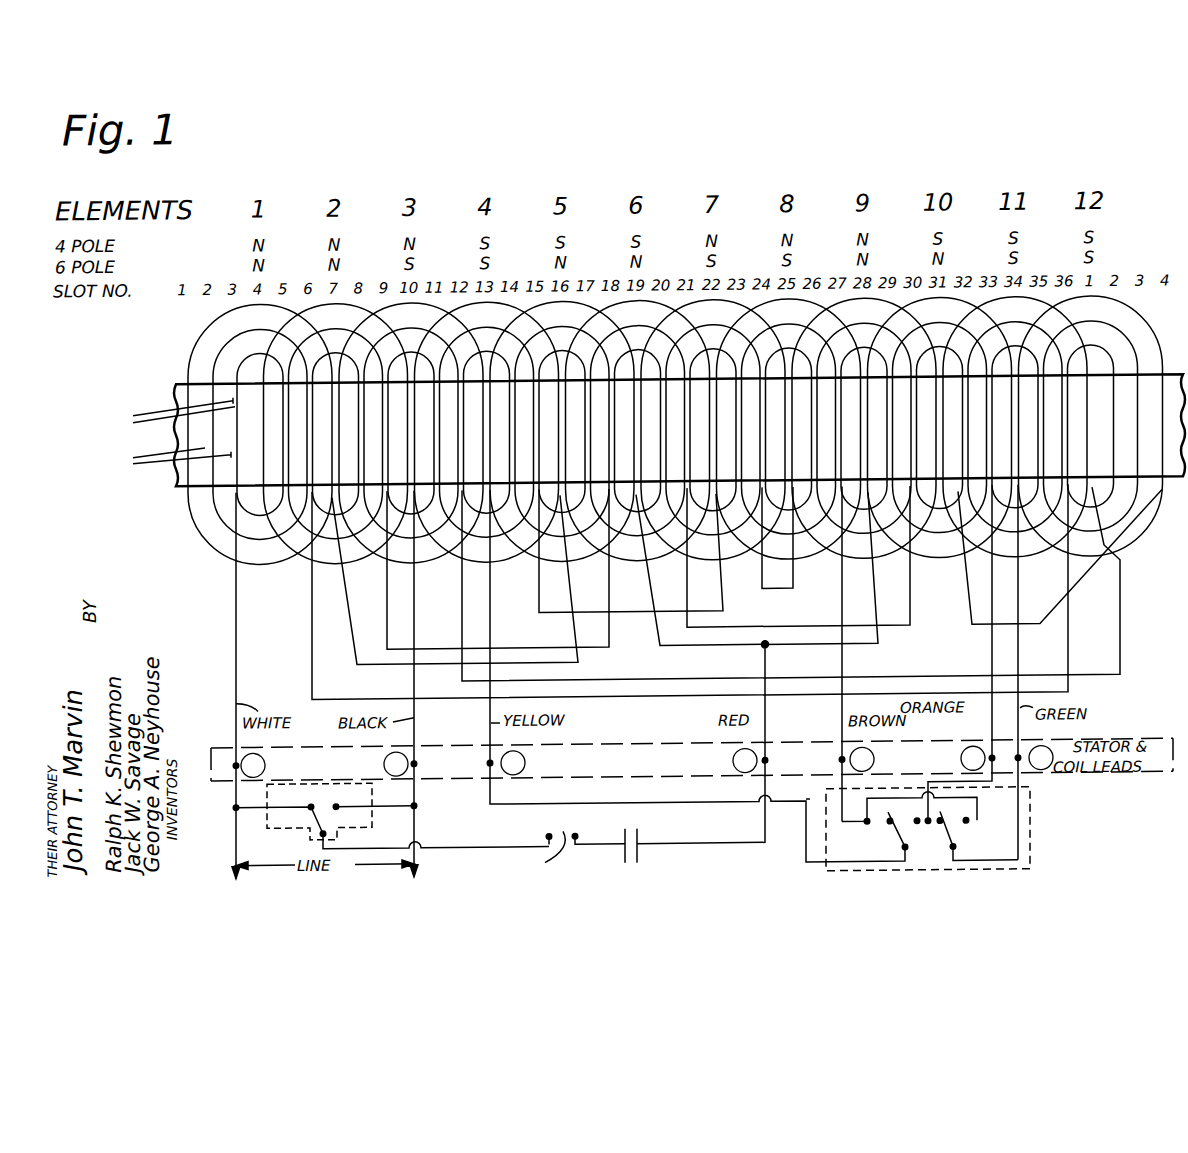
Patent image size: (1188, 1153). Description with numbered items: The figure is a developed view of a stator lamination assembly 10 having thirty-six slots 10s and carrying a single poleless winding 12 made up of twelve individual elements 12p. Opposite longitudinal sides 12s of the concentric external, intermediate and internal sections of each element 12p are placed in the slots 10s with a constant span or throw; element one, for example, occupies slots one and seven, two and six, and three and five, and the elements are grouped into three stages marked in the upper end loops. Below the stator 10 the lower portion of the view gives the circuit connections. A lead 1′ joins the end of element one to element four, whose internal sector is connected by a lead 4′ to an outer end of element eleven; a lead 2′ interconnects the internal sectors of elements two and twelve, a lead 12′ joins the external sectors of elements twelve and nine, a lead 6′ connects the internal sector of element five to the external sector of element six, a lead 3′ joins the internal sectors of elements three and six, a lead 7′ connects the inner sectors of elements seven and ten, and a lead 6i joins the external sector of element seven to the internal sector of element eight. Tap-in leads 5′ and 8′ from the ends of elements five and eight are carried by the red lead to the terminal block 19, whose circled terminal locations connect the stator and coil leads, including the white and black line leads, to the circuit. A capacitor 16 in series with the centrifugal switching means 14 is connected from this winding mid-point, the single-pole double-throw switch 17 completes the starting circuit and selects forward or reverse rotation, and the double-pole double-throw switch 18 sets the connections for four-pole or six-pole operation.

The stator lamination assembly 10 is at (176, 381).
The poleless winding 12 is at (218, 514).
The slot 10s is at (165, 459).
The longitudinal sides 12s is at (166, 415).
The elements 12p is at (503, 567).
The lead 1′ is at (510, 662).
The lead 2′ is at (612, 697).
The lead 3′ is at (521, 647).
The lead 4′ is at (621, 680).
The tap-in lead 5′ is at (702, 648).
The lead 6′ is at (640, 611).
The lead 6i is at (780, 592).
The lead 7′ is at (781, 626).
The tap-in lead 8′ is at (797, 664).
The lead 12′ is at (1028, 629).
The centrifugal switching means 14 is at (538, 872).
The capacitor 16 is at (638, 853).
The single-pole double-throw switch 17 is at (401, 822).
The double-pole double-throw switch 18 is at (1030, 829).
The terminal block 19 is at (221, 757).